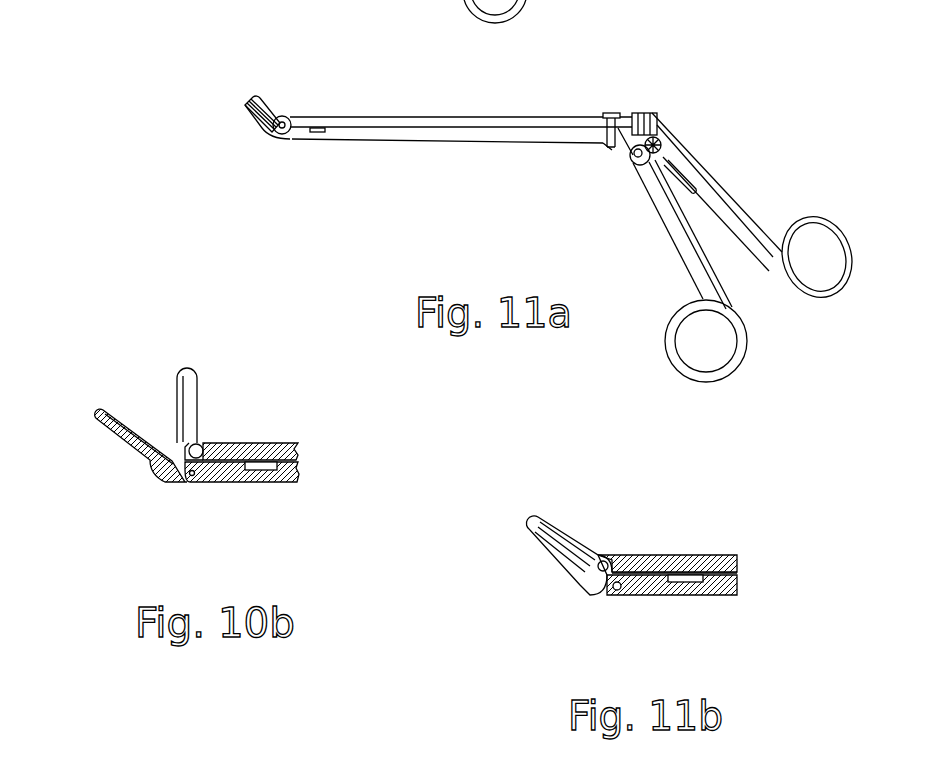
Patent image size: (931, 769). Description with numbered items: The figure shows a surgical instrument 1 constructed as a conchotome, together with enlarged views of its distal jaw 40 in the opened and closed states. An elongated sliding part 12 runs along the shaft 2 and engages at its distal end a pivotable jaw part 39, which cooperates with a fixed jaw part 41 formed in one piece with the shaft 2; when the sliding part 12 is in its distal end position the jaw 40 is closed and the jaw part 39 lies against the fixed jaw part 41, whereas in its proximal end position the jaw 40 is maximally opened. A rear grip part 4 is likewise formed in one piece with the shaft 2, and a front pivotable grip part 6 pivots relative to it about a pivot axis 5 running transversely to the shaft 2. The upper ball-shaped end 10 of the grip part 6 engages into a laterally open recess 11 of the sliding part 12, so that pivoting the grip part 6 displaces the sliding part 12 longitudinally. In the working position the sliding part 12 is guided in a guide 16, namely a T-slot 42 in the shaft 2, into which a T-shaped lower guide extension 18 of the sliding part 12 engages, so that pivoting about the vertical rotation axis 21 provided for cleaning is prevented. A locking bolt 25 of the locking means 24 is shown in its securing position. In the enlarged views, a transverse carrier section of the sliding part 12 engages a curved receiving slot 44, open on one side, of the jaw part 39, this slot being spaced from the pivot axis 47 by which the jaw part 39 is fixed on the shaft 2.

In FIG. 11a, the surgical instrument 1 is at (502, 192).
In FIG. 11a, the shaft 2 is at (420, 131).
In FIG. 10b, the shaft 2 is at (245, 482).
In FIG. 11a, the rear grip part 4 is at (743, 216).
In FIG. 11a, the pivot axis 5 is at (633, 160).
In FIG. 11a, the pivotable grip part 6 is at (694, 266).
In FIG. 11a, the ball-shaped end 10 is at (645, 118).
In FIG. 11a, the laterally open recess 11 is at (640, 116).
In FIG. 11a, the sliding part 12 is at (481, 116).
In FIG. 10b, the sliding part 12 is at (300, 452).
In FIG. 11b, the sliding part 12 is at (647, 555).
In FIG. 11a, the guide 16 is at (320, 132).
In FIG. 11b, the lower guide extension 18 is at (682, 573).
In FIG. 11a, the rotation axis 21 is at (603, 142).
In FIG. 11a, the locking means 24 is at (714, 128).
In FIG. 11a, the locking bolt 25 is at (698, 136).
In FIG. 11a, the jaw part 39 is at (256, 96).
In FIG. 10b, the jaw part 39 is at (187, 378).
In FIG. 11b, the jaw part 39 is at (558, 517).
In FIG. 11a, the jaw 40 is at (246, 134).
In FIG. 10b, the jaw 40 is at (163, 508).
In FIG. 11b, the jaw 40 is at (558, 597).
In FIG. 10b, the fixed jaw part 41 is at (127, 448).
In FIG. 11b, the T-slot 42 is at (694, 595).
In FIG. 10b, the receiving slot 44 is at (207, 444).
In FIG. 11b, the receiving slot 44 is at (598, 554).
In FIG. 10b, the pivot axis 47 is at (192, 480).
In FIG. 11b, the pivot axis 47 is at (607, 593).